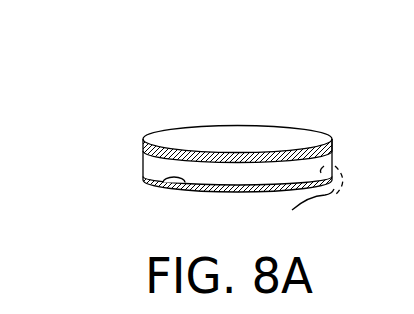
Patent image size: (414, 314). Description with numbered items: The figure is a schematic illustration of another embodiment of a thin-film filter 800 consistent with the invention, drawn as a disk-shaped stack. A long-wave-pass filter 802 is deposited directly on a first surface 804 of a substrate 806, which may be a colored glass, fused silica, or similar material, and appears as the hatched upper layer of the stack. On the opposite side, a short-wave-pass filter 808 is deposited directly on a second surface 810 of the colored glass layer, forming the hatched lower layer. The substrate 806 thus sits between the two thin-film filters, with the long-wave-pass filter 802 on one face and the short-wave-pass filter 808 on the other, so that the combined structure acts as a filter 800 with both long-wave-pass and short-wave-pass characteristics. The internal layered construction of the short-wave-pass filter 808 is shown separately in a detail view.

The filter 800 is at (301, 98).
The long-wave-pass filter 802 is at (144, 145).
The first surface 804 is at (333, 152).
The substrate 806 is at (143, 163).
The short-wave-pass filter 808 is at (143, 178).
The second surface 810 is at (155, 186).